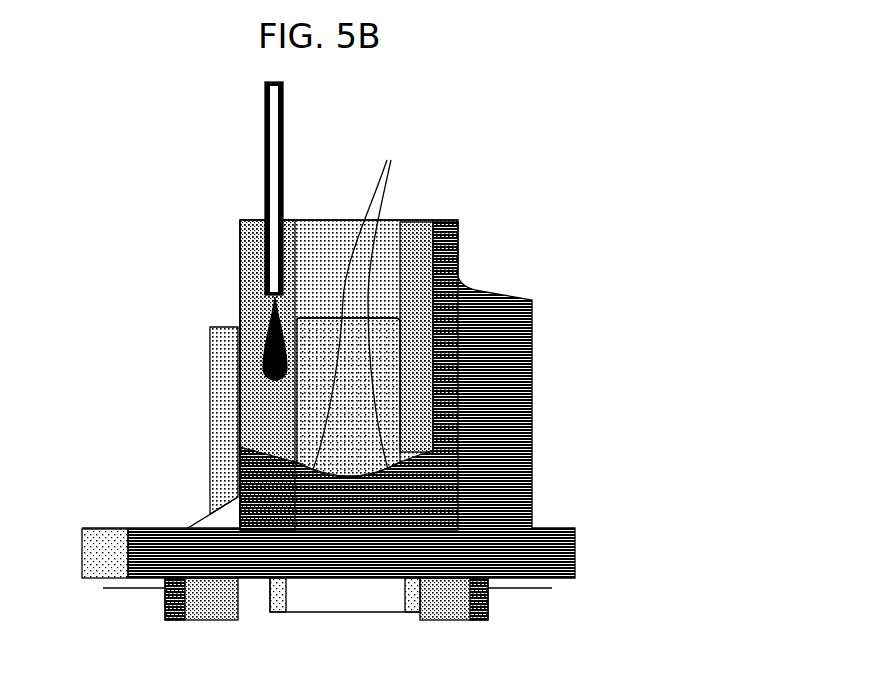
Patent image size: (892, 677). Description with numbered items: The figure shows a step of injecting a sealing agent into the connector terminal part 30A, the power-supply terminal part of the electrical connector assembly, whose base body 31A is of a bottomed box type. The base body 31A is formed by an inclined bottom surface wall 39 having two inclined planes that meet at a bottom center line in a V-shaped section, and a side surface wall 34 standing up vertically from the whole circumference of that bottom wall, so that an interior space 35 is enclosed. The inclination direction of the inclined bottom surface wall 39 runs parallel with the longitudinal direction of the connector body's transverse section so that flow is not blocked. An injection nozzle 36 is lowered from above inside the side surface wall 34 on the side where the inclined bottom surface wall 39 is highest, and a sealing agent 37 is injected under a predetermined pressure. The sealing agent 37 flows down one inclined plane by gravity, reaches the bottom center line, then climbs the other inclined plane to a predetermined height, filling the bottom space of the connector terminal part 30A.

The connector terminal part 30A is at (158, 510).
The base body 31A is at (523, 505).
The side surface wall 34 is at (243, 268).
The interior space 35 is at (404, 266).
The injection nozzle 36 is at (265, 138).
The sealing agent 37 is at (265, 352).
The inclined bottom surface wall 39 is at (350, 303).